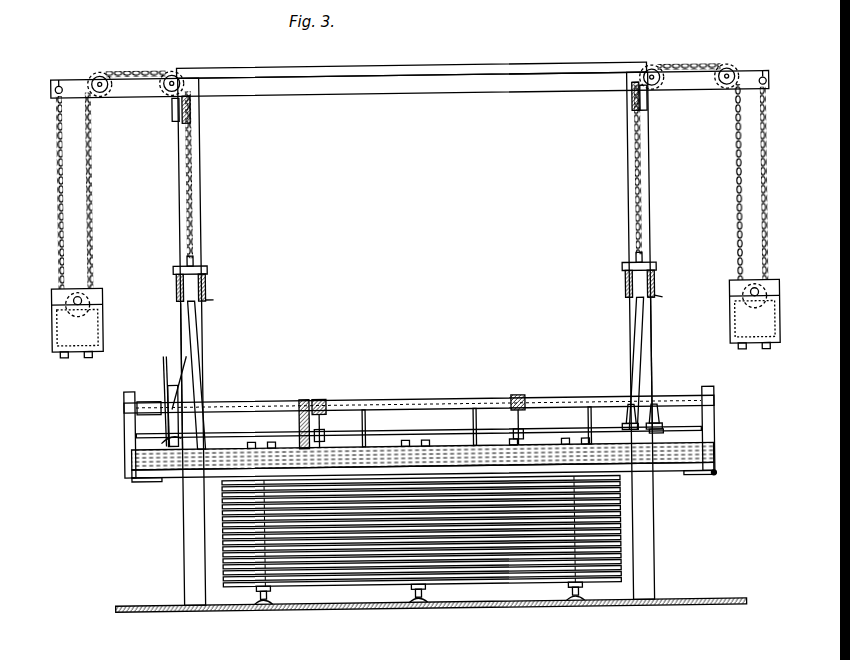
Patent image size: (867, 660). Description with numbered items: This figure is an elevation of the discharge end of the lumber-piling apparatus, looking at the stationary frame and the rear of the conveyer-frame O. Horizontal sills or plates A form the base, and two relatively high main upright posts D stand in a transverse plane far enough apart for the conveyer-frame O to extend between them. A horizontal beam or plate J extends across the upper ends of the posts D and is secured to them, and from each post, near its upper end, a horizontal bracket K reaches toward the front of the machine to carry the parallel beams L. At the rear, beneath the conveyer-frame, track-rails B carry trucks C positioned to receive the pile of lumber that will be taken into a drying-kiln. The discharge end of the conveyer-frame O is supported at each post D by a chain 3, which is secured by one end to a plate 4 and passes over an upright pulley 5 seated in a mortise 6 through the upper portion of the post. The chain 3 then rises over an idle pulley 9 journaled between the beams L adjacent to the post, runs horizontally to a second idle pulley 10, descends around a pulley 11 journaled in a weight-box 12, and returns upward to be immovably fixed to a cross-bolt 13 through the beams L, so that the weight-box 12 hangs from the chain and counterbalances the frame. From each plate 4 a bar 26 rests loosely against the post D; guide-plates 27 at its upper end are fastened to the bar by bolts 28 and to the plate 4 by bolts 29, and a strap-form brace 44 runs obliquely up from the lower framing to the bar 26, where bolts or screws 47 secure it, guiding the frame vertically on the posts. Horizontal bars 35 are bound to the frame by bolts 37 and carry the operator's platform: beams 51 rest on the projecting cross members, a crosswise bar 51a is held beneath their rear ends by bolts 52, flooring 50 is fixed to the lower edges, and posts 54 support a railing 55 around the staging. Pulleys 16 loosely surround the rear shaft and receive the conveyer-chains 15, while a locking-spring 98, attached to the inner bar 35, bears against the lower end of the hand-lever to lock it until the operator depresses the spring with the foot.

The horizontal beam J is at (606, 72).
The parallel beam L is at (702, 92).
The main upright post D is at (199, 241).
The idle pulley 9 is at (175, 70).
The idle pulley 10 is at (110, 74).
The cross-bolt 13 is at (64, 81).
The chain 3 is at (195, 162).
The upright pulley 5 is at (194, 104).
The mortise 6 is at (191, 92).
The horizontal bracket K is at (176, 108).
The weight-box 12 is at (104, 310).
The pulley 11 is at (84, 294).
The bolt 29 is at (180, 266).
The guide-plate 27 is at (177, 290).
The plate 4 is at (195, 258).
The bolt 28 is at (604, 325).
The bolt 47 is at (210, 297).
The bar 26 is at (183, 327).
The strap-form brace 44 is at (198, 339).
The locking-spring 98 is at (164, 401).
The railing 55 is at (127, 390).
The post 54 is at (124, 412).
The flooring 50 is at (713, 464).
The bolt 52 is at (712, 476).
The bar or beam 51a is at (160, 472).
The beam 51 is at (129, 458).
The conveyer-chain 15 is at (306, 398).
The pulley 16 is at (328, 399).
The bolt 37 is at (627, 408).
The horizontal bar 35 is at (662, 433).
The conveyer-frame O is at (605, 425).
The horizontal sill A is at (124, 602).
The track-rail B is at (262, 600).
The truck C is at (252, 598).